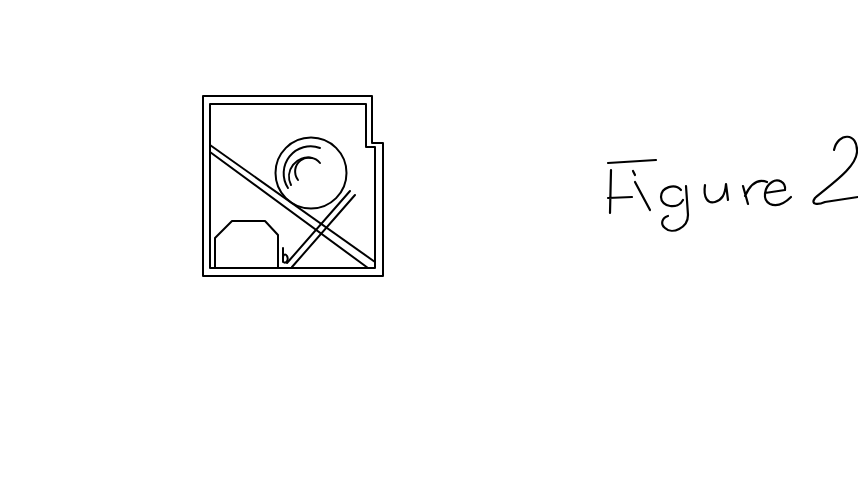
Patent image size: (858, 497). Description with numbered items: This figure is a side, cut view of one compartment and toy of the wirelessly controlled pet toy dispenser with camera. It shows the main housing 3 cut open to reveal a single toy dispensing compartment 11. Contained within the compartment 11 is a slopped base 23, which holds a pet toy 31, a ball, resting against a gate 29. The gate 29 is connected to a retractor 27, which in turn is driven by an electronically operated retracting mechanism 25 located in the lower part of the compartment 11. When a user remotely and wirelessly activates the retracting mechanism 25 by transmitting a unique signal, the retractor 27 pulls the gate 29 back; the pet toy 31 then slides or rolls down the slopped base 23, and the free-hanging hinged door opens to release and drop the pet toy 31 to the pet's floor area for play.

The main housing 3 is at (268, 96).
The toy dispensing compartment 11 is at (383, 203).
The slopped base 23 is at (243, 172).
The electronically operated retracting mechanism 25 is at (238, 239).
The retractor 27 is at (303, 248).
The gate 29 is at (333, 209).
The pet toy 31 is at (333, 143).